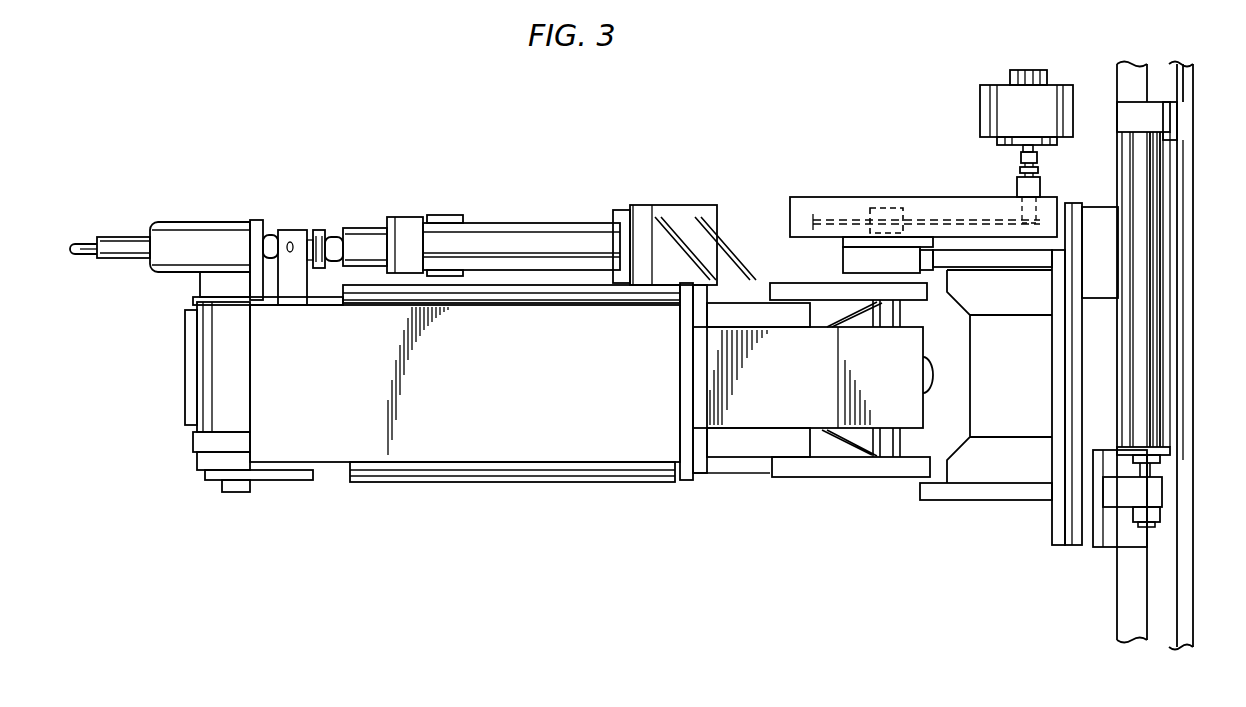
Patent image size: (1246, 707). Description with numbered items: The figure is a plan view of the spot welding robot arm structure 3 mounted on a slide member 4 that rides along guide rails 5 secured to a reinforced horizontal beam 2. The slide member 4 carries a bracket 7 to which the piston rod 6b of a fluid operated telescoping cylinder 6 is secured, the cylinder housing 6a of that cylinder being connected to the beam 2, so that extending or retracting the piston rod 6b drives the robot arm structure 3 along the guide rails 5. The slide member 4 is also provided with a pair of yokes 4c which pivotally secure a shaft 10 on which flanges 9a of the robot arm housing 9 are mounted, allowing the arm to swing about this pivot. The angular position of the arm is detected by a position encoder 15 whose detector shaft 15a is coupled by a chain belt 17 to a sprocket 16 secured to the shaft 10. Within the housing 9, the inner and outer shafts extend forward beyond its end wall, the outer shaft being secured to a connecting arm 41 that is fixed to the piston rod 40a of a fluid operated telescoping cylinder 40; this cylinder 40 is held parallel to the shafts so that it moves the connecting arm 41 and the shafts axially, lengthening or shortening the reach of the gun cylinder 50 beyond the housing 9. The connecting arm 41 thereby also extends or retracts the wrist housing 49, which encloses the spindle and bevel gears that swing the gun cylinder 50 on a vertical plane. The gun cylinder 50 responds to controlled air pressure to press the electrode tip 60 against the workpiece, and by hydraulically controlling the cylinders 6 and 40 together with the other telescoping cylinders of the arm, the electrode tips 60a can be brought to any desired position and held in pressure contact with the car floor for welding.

The spot welding robot arm structure 3 is at (585, 157).
The electrode tip 60a is at (78, 243).
The electrode tip 60 is at (119, 237).
The gun cylinder 50 is at (195, 222).
The connecting arm 41 is at (303, 255).
The piston rod 40a is at (323, 240).
The fluid operated telescoping cylinder 40 is at (506, 222).
The robot arm housing 9 is at (531, 452).
The flange 9a is at (785, 283).
The shaft 10 is at (905, 311).
The sprocket 16 is at (817, 205).
The chain belt 17 is at (968, 222).
The position encoder 15 is at (1001, 97).
The detector shaft 15a is at (1020, 168).
The yoke 4c is at (989, 257).
The slide member 4 is at (1075, 541).
The guide rail 5 is at (1135, 605).
The horizontal beam 2 is at (1187, 582).
The fluid operated telescoping cylinder 6 is at (1173, 242).
The cylinder housing 6a is at (1150, 307).
The piston rod 6b is at (1157, 473).
The bracket 7 is at (1160, 495).
The wrist housing 49 is at (195, 397).